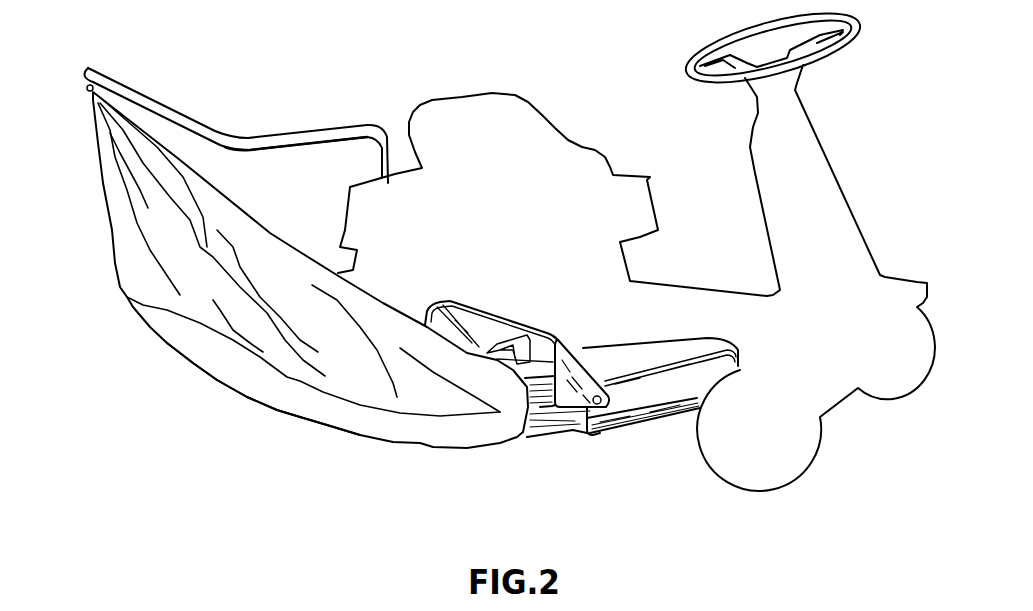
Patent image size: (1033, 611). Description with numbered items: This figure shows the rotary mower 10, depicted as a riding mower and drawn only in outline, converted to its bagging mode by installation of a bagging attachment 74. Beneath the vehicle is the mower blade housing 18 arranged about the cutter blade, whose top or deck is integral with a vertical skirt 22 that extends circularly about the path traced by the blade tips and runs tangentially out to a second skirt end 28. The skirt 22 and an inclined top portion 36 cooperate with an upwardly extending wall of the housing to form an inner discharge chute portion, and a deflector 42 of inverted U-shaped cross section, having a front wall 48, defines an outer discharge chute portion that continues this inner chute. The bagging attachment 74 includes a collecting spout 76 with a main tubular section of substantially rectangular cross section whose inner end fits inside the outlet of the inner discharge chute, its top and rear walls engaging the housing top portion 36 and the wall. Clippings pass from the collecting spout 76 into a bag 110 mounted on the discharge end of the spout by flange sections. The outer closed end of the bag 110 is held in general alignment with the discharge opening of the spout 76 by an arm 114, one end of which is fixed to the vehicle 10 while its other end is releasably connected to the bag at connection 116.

The rotary mower 10 is at (577, 137).
The arm 114 is at (309, 137).
The releasable connection 116 is at (88, 84).
The bag 110 is at (263, 233).
The bagging attachment 74 is at (299, 421).
The deflector 42 is at (482, 300).
The collecting spout 76 is at (534, 440).
The front wall 48 is at (572, 372).
The top portion 36 is at (623, 368).
The vertical skirt 22 is at (672, 402).
The second skirt end 28 is at (583, 428).
The mower blade housing 18 is at (643, 433).